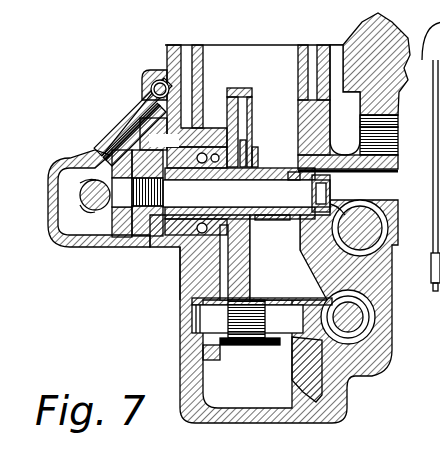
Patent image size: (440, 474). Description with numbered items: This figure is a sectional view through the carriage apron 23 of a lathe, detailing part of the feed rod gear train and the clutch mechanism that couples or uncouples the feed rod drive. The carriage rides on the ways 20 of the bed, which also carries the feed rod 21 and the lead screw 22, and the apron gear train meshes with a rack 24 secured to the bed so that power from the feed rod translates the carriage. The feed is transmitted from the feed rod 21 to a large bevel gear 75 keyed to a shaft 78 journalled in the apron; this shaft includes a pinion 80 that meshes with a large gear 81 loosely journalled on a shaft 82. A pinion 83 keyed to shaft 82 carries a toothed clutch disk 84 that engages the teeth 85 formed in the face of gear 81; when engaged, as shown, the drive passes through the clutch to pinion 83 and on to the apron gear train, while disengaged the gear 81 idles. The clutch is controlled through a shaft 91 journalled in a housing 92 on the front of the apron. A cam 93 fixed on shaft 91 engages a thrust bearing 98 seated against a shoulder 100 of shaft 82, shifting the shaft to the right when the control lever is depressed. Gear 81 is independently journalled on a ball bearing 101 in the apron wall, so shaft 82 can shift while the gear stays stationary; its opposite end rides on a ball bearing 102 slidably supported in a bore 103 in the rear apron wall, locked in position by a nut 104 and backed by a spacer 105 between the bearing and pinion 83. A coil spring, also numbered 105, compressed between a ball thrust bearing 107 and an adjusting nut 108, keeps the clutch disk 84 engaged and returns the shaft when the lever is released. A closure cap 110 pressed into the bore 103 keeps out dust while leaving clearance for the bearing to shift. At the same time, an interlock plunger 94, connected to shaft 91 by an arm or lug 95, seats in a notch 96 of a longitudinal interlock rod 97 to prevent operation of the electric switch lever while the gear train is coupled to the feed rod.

The ways 20 is at (367, 40).
The feed rod 21 is at (397, 323).
The lead screw 22 is at (397, 238).
The carriage apron 23 is at (183, 372).
The rack 24 is at (399, 121).
The large bevel gear 75 is at (300, 392).
The shaft 78 is at (272, 346).
The pinion 80 is at (240, 346).
The large gear 81 is at (240, 88).
The shaft 82 is at (256, 180).
The pinion 83 is at (399, 145).
The toothed clutch disk 84 is at (254, 150).
The teeth 85 is at (245, 140).
The shaft 91 is at (93, 213).
The housing 92 is at (58, 240).
The cam 93 is at (80, 207).
The interlock plunger 94 is at (125, 126).
The arm or lug 95 is at (85, 185).
The notch 96 is at (157, 80).
The longitudinal interlock rod 97 is at (177, 45).
The thrust bearing 98 is at (121, 216).
The shoulder 100 is at (146, 212).
The ball bearing 101 is at (180, 280).
The ball bearing 102 is at (300, 238).
The bore 103 is at (340, 205).
The nut 104 is at (326, 184).
The spacer 105 is at (123, 136).
The ball thrust bearing 107 is at (160, 134).
The adjusting nut 108 is at (118, 148).
The closure cap 110 is at (345, 200).